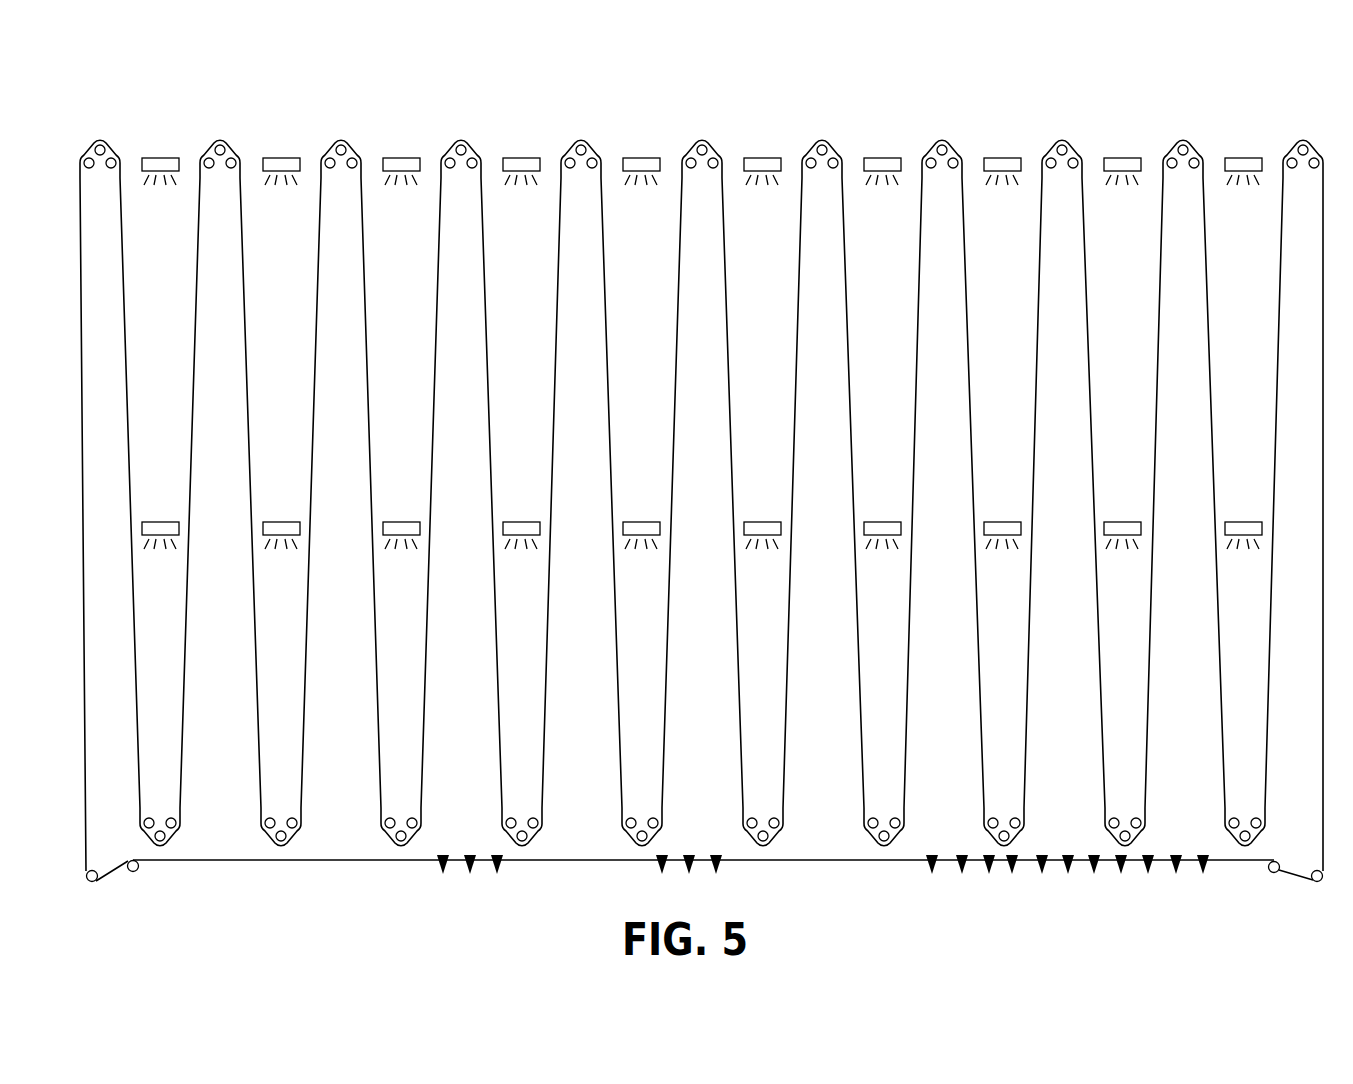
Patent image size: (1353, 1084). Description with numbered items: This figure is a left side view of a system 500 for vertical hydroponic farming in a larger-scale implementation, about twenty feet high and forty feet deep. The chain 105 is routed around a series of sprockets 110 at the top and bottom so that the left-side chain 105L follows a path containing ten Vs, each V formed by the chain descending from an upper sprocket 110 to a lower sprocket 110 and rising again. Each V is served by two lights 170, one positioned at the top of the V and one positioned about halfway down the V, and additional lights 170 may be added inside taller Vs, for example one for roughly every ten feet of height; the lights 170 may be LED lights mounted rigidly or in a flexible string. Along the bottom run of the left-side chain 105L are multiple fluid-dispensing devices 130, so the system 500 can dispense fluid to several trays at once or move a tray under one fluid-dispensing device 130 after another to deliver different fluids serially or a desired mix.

The system 500 is at (566, 82).
The chain 105 is at (127, 317).
The left-side chain 105L is at (848, 866).
The sprocket 110 is at (121, 155).
The light 170 is at (168, 157).
The fluid-dispensing device 130 is at (497, 855).